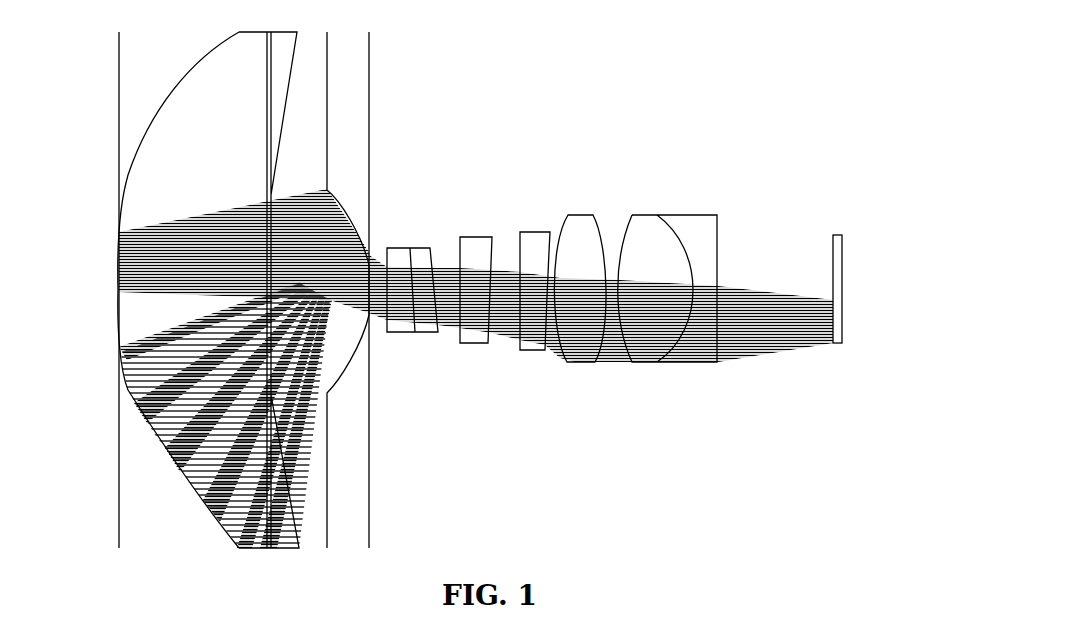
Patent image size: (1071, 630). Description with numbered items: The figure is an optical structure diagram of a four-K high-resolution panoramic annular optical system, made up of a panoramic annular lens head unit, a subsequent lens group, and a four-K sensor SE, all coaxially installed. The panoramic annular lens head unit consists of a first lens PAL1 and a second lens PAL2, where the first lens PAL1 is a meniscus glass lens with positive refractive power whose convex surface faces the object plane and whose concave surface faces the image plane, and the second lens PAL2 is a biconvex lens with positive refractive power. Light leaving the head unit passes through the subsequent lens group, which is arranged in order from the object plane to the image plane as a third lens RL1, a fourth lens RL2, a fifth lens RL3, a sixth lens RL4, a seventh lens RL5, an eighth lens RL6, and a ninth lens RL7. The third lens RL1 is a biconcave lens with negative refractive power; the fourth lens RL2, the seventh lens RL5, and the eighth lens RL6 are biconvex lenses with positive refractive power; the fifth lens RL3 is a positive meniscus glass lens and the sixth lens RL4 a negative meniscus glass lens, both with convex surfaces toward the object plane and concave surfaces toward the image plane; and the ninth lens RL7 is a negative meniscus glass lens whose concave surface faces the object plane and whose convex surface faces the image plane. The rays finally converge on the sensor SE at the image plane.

The first lens PAL1 is at (228, 126).
The second lens PAL2 is at (352, 213).
The third lens RL1 is at (402, 256).
The fourth lens RL2 is at (468, 255).
The fifth lens RL3 is at (521, 248).
The sixth lens RL4 is at (585, 242).
The seventh lens RL5 is at (648, 247).
The eighth lens RL6 is at (665, 243).
The ninth lens RL7 is at (688, 247).
The 4K sensor SE is at (840, 237).